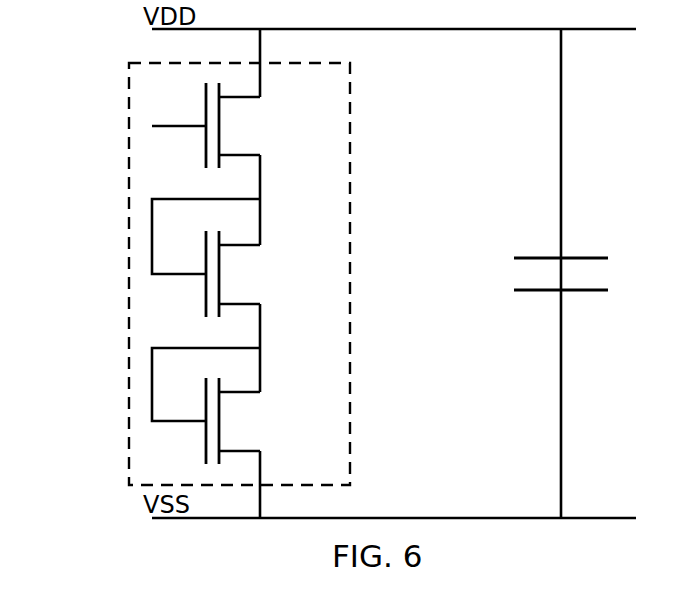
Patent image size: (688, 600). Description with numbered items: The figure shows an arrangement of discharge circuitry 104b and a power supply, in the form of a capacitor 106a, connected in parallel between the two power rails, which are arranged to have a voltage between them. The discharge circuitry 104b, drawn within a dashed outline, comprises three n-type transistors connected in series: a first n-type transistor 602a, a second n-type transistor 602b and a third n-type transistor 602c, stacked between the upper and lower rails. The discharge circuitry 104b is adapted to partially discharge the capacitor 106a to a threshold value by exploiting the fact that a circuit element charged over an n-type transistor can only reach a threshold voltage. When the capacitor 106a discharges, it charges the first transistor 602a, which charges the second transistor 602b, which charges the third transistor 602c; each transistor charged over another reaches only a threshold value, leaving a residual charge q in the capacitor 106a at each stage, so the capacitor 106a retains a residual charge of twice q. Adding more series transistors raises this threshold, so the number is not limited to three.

The discharge circuitry 104b is at (350, 108).
The first n-type transistor 602a is at (206, 107).
The second n-type transistor 602b is at (205, 291).
The third n-type transistor 602c is at (205, 441).
The capacitor 106a is at (607, 233).